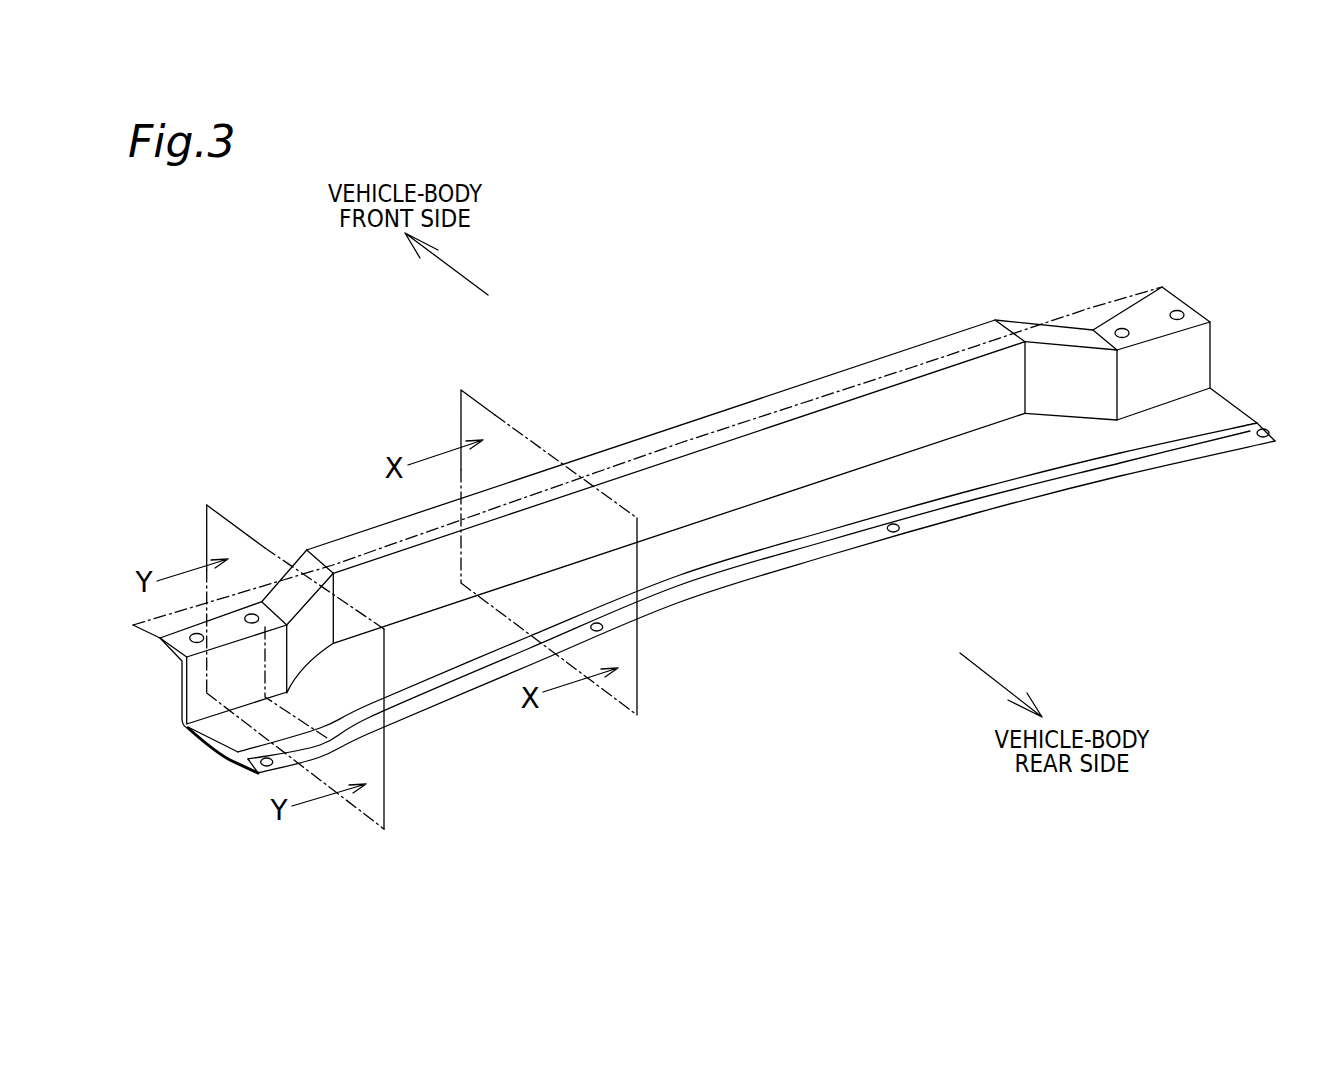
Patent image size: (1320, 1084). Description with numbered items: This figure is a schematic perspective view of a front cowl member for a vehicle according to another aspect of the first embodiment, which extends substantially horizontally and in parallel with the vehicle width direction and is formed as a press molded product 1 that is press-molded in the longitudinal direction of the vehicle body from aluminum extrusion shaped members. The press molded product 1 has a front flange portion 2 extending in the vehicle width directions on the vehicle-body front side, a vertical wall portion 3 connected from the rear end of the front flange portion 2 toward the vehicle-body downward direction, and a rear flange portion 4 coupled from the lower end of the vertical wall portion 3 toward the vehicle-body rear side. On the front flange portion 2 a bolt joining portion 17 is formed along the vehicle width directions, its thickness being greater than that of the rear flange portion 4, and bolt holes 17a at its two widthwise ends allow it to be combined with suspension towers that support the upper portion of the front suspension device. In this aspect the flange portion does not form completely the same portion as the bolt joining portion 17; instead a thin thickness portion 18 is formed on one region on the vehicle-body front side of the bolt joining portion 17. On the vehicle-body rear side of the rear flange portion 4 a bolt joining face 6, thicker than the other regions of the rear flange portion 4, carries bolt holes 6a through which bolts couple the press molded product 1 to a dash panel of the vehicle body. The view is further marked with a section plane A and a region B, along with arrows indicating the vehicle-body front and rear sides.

The press molded product 1 is at (704, 530).
The front flange portion 2 is at (671, 441).
The vertical wall portion 3 is at (874, 430).
The rear flange portion 4 is at (768, 537).
The bolt joining face 6 is at (1002, 500).
The bolt holes 6a is at (260, 766).
The bolt joining portion 17 is at (625, 462).
The bolt holes 17a is at (252, 613).
The thin thickness portion 18 is at (1128, 326).
The section A is at (533, 438).
The bracket portion B is at (267, 550).